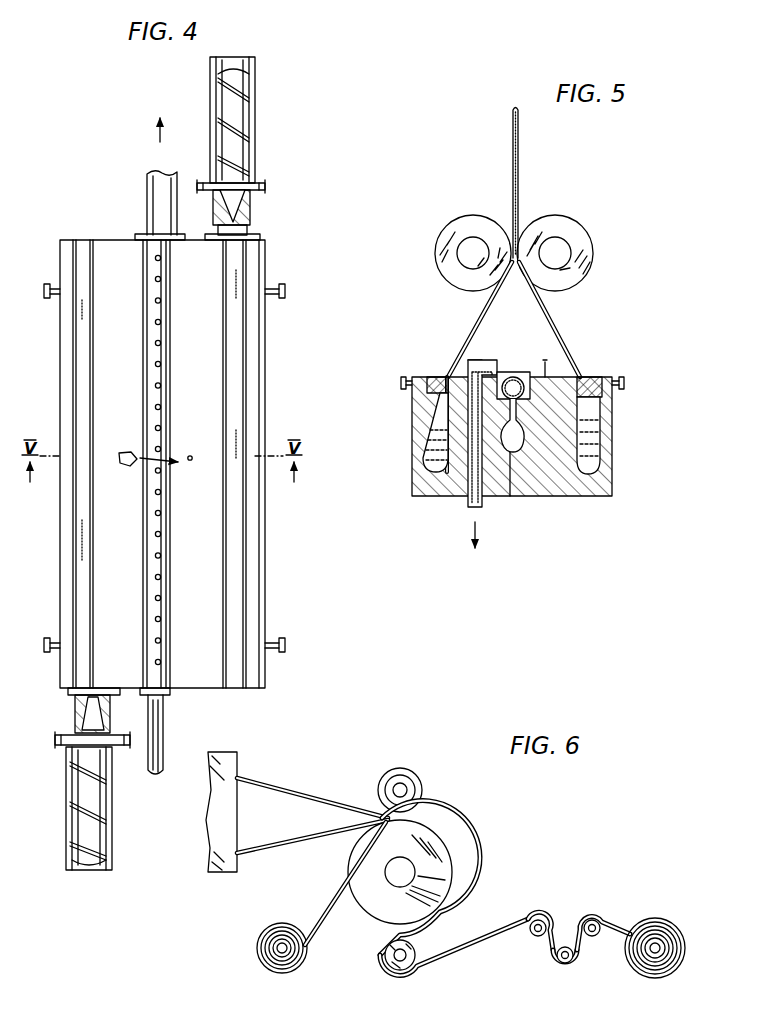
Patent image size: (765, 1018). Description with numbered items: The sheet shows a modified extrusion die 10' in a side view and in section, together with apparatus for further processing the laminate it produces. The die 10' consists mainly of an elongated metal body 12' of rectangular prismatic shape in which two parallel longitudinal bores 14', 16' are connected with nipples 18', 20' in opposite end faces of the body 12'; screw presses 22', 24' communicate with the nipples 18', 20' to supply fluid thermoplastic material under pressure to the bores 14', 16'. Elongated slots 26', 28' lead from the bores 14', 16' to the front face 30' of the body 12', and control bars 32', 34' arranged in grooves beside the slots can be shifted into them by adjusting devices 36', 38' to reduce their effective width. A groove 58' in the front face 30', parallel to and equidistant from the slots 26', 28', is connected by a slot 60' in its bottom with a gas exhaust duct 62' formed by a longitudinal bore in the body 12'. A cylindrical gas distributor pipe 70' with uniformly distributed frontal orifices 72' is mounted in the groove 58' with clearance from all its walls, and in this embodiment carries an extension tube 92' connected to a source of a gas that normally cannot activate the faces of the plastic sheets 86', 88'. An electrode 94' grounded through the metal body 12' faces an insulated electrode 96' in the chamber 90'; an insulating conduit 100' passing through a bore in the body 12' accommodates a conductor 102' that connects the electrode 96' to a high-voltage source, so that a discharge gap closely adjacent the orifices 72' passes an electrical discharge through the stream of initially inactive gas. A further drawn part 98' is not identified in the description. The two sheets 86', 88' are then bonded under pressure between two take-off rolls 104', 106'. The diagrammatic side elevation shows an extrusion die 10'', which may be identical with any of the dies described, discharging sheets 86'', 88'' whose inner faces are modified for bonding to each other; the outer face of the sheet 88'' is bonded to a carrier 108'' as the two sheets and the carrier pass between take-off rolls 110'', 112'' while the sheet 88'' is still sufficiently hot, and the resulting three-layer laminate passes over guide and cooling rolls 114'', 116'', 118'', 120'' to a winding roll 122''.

In FIG. 4, the extrusion die 10' is at (135, 464).
In FIG. 4, the metal body 12' is at (267, 464).
In FIG. 5, the metal body 12' is at (512, 454).
In FIG. 5, the longitudinal bore 14' is at (404, 432).
In FIG. 5, the longitudinal bore 16' is at (621, 435).
In FIG. 4, the nipple 18' is at (80, 721).
In FIG. 4, the nipple 20' is at (255, 215).
In FIG. 4, the screw press 22' is at (67, 808).
In FIG. 4, the screw press 24' is at (217, 125).
In FIG. 4, the elongated slot 26' is at (102, 464).
In FIG. 5, the elongated slot 26' is at (408, 419).
In FIG. 4, the elongated slot 28' is at (210, 364).
In FIG. 5, the elongated slot 28' is at (629, 412).
In FIG. 5, the front face 30' is at (632, 363).
In FIG. 5, the control bar 32' is at (426, 367).
In FIG. 5, the control bar 34' is at (609, 360).
In FIG. 4, the adjusting device 36' is at (37, 305).
In FIG. 5, the adjusting device 36' is at (384, 393).
In FIG. 4, the adjusting device 38' is at (296, 314).
In FIG. 5, the adjusting device 38' is at (648, 380).
In FIG. 5, the groove 58' is at (594, 369).
In FIG. 5, the slot 60' is at (531, 447).
In FIG. 5, the gas exhaust duct 62' is at (511, 508).
In FIG. 4, the gas distributor pipe 70' is at (176, 464).
In FIG. 5, the gas distributor pipe 70' is at (550, 221).
In FIG. 4, the frontal orifices 72' is at (183, 459).
In FIG. 5, the plastic sheet 86' is at (478, 319).
In FIG. 5, the plastic sheet 88' is at (567, 319).
In FIG. 5, the chamber 90' is at (456, 393).
In FIG. 4, the extension tube 92' is at (176, 734).
In FIG. 4, the electrode 94' is at (197, 441).
In FIG. 5, the electrode 94' is at (570, 350).
In FIG. 4, the insulated electrode 96' is at (146, 442).
In FIG. 5, the insulated electrode 96' is at (518, 367).
In FIG. 5, the guide tube 98' is at (484, 416).
In FIG. 5, the insulating conduit 100' is at (431, 506).
In FIG. 5, the conductor 102' is at (453, 530).
In FIG. 5, the roll 104' is at (464, 246).
In FIG. 5, the roll 106' is at (575, 251).
In FIG. 6, the extrusion die 10'' is at (219, 834).
In FIG. 6, the sheet 86'' is at (312, 788).
In FIG. 6, the sheet 88'' is at (312, 853).
In FIG. 6, the carrier 108'' is at (321, 901).
In FIG. 6, the take-off roll 110'' is at (430, 878).
In FIG. 6, the take-off roll 112'' is at (434, 790).
In FIG. 6, the guide and cooling roll 114'' is at (454, 947).
In FIG. 6, the guide and cooling roll 116'' is at (526, 944).
In FIG. 6, the guide and cooling roll 118'' is at (571, 930).
In FIG. 6, the guide and cooling roll 120'' is at (603, 948).
In FIG. 6, the winding roll 122'' is at (658, 936).